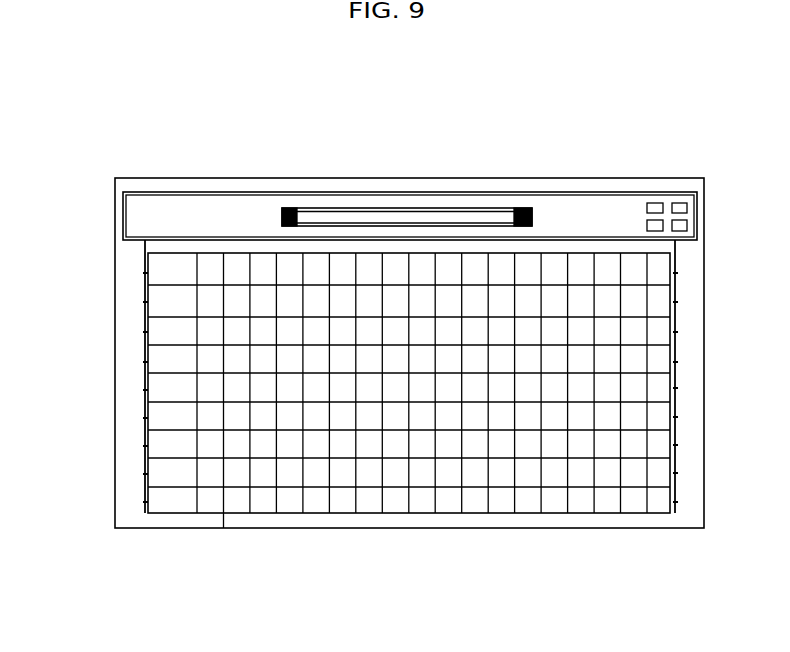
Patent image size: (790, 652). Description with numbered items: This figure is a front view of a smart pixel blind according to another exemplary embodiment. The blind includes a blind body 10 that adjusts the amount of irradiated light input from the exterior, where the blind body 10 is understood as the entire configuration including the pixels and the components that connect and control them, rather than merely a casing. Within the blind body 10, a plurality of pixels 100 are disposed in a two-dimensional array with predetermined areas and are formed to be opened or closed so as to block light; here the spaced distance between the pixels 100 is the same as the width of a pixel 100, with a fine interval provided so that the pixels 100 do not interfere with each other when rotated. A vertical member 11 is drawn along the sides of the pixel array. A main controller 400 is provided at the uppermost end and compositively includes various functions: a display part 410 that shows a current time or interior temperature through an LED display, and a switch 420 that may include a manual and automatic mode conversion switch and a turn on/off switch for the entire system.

The blind body 10 is at (101, 150).
The frame 11 is at (675, 372).
The pixels 100 is at (212, 510).
The main controller 400 is at (615, 205).
The display part 410 is at (415, 218).
The switch 420 is at (680, 206).